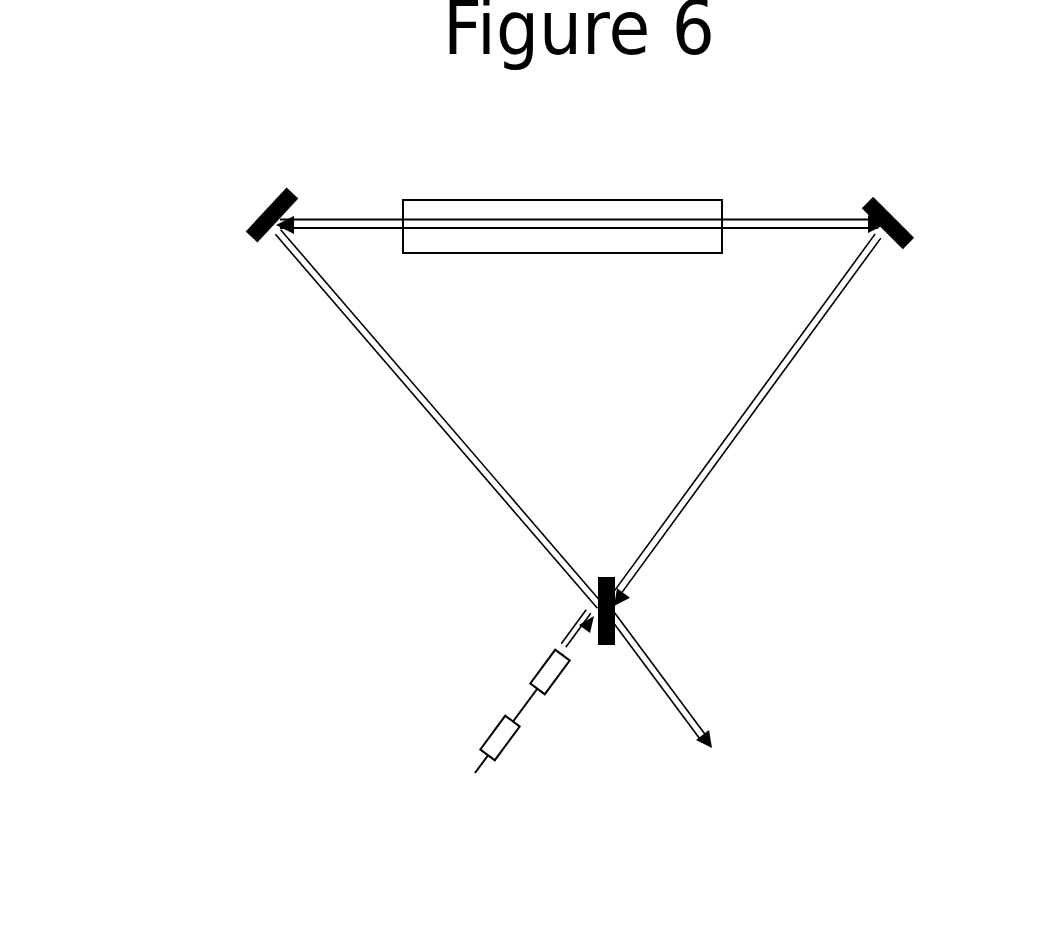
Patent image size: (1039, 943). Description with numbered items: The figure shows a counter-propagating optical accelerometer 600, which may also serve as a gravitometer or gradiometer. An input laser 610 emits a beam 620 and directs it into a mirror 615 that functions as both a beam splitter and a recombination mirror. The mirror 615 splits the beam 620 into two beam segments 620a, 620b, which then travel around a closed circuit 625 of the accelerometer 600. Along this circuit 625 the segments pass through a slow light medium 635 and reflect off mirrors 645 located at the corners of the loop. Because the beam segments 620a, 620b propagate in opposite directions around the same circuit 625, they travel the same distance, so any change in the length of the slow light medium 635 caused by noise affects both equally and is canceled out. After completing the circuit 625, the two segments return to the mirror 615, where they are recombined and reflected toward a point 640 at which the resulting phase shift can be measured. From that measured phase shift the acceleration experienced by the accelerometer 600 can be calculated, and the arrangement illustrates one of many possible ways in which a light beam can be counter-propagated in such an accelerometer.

The accelerometer 600 is at (277, 202).
The mirrors 645 is at (913, 235).
The slow light medium 635 is at (540, 208).
The circuit 625 is at (768, 245).
The beam segment 620a is at (370, 345).
The beam segment 620b is at (355, 309).
The mirror 615 is at (608, 645).
The beam 620 is at (573, 633).
The input laser 610 is at (459, 750).
The point 640 is at (725, 725).